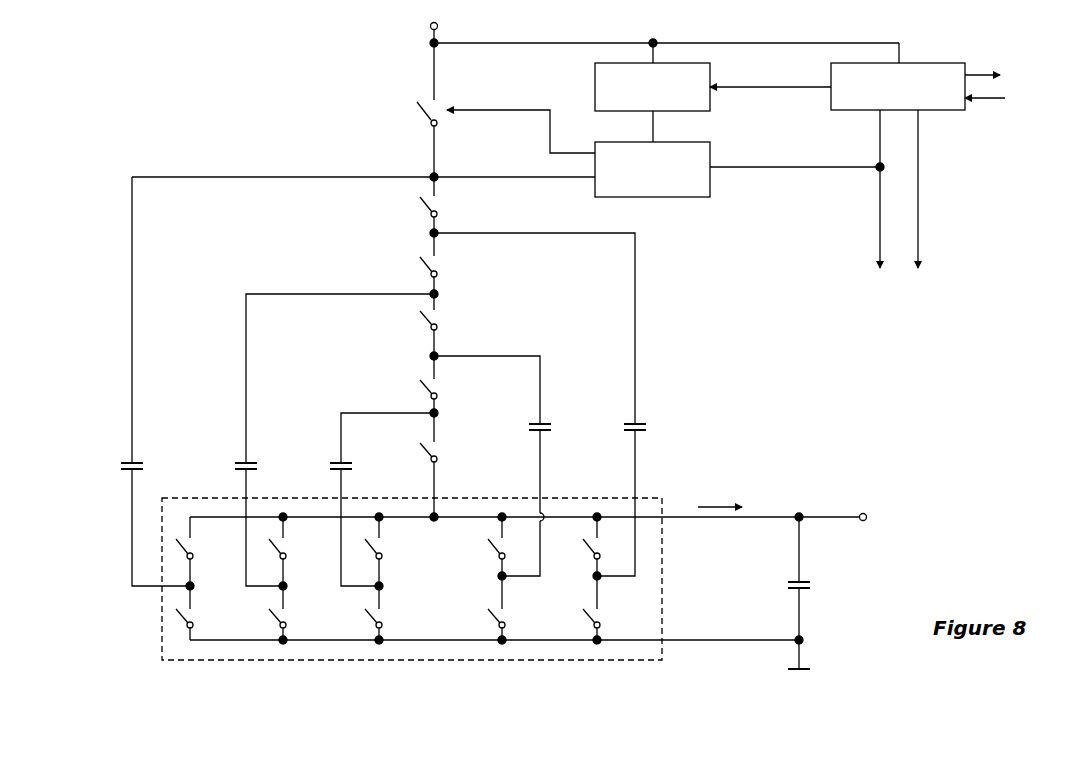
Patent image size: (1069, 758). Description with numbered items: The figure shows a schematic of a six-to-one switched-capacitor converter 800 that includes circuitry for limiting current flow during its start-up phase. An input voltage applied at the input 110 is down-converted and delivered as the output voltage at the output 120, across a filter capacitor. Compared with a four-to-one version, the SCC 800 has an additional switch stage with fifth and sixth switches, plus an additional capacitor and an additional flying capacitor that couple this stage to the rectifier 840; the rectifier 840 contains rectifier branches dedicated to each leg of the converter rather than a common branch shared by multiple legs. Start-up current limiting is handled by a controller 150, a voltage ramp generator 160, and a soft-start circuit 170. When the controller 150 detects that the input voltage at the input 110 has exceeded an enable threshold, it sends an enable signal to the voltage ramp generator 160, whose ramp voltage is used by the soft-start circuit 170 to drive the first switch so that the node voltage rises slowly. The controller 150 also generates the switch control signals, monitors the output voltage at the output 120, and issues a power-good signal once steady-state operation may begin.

The switched-capacitor converter 800 is at (177, 44).
The input 110 is at (450, 27).
The output 120 is at (837, 505).
The controller 150 is at (898, 77).
The voltage ramp generator 160 is at (652, 78).
The soft-start circuit 170 is at (652, 160).
The rectifier 840 is at (480, 570).